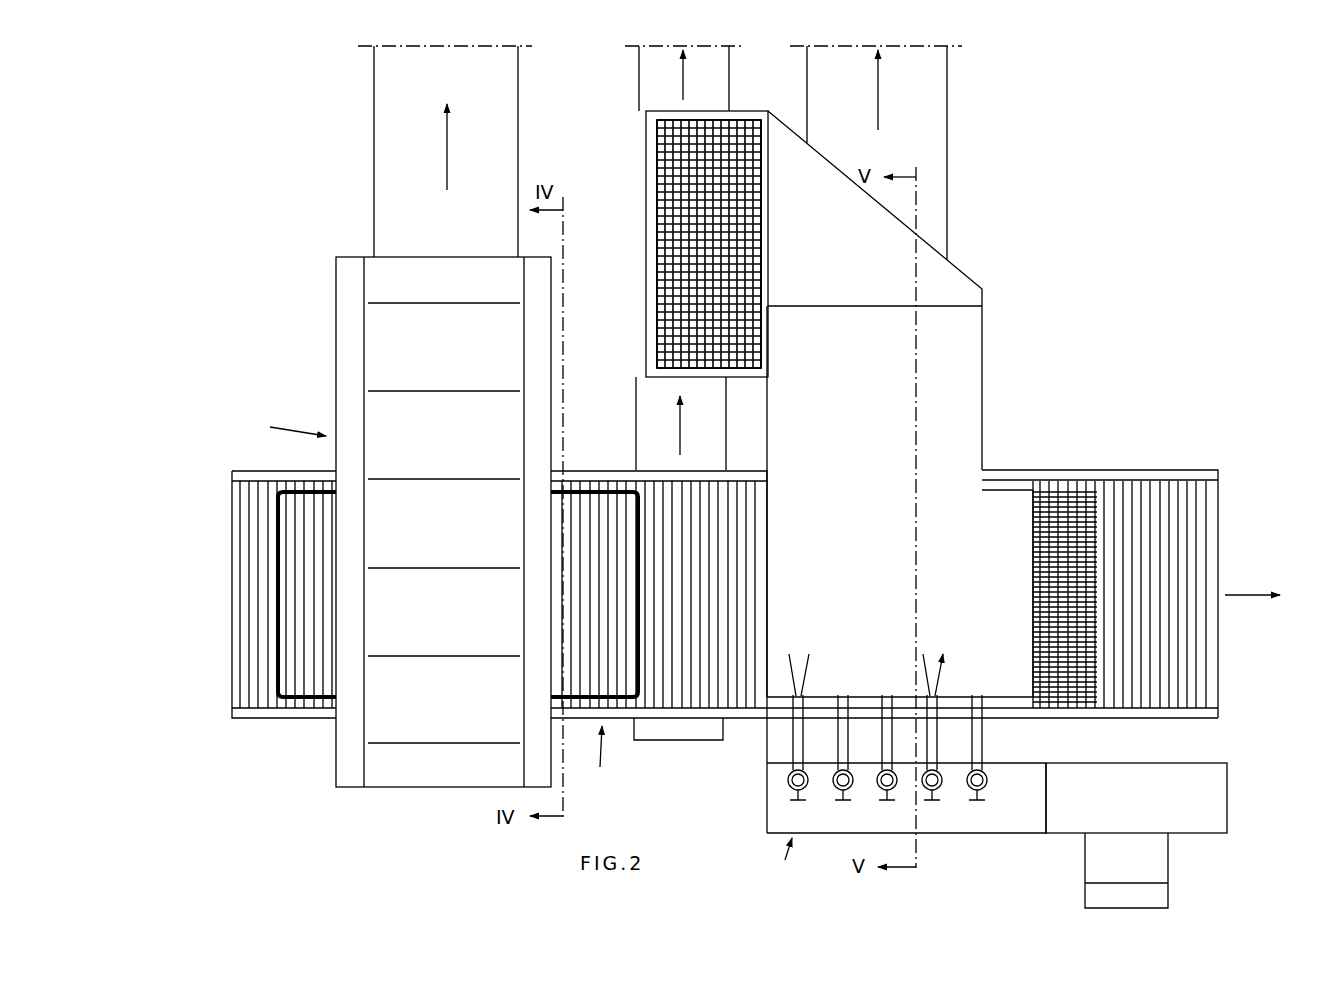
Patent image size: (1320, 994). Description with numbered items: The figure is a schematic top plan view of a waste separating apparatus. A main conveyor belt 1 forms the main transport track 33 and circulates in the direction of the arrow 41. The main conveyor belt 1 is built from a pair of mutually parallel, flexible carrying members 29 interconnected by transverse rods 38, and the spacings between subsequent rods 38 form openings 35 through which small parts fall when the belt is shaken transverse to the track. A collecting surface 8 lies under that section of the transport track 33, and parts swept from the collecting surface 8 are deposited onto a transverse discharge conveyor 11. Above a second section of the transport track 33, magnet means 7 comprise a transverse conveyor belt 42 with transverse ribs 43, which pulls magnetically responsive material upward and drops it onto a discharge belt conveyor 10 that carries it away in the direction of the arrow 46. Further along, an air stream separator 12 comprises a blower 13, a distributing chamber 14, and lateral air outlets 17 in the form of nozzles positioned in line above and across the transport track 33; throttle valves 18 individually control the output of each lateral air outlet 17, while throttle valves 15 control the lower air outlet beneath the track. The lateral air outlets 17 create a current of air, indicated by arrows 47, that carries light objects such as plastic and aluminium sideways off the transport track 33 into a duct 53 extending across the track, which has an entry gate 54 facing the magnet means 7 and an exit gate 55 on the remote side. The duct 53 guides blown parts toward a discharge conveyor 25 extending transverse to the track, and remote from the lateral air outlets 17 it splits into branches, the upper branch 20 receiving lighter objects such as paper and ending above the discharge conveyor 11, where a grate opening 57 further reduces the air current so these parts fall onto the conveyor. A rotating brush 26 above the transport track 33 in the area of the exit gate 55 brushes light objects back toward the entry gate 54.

The main conveyor belt 1 is at (228, 582).
The magnet means 7 is at (288, 425).
The collecting surface 8 is at (290, 702).
The discharge belt conveyor 10 is at (445, 151).
The transverse discharge conveyor 11 is at (685, 393).
The air stream separator 12 is at (779, 861).
The blower 13 is at (1136, 835).
The distributing chamber 14 is at (765, 833).
The throttle valves 15 is at (772, 748).
The lateral air outlets 17 is at (985, 740).
The throttle valves 18 is at (788, 785).
The upper branch 20 is at (875, 290).
The discharge conveyor 25 is at (876, 153).
The rotating brush 26 is at (1058, 502).
The flexible carrying members 29 is at (1156, 738).
The transport track 33 is at (600, 756).
The openings 35 is at (244, 510).
The transverse rods 38 is at (258, 545).
The arrow 41 is at (1252, 577).
The transverse conveyor belt 42 is at (443, 522).
The transverse ribs 43 is at (453, 655).
The arrow 46 is at (445, 163).
The arrows 47 is at (944, 688).
The duct 53 is at (992, 569).
The entry gate 54 is at (768, 560).
The exit gate 55 is at (1033, 565).
The grate opening 57 is at (690, 185).